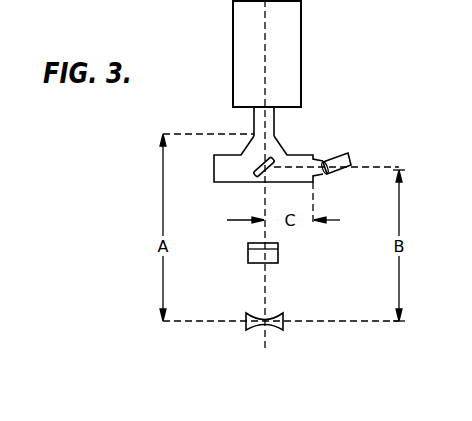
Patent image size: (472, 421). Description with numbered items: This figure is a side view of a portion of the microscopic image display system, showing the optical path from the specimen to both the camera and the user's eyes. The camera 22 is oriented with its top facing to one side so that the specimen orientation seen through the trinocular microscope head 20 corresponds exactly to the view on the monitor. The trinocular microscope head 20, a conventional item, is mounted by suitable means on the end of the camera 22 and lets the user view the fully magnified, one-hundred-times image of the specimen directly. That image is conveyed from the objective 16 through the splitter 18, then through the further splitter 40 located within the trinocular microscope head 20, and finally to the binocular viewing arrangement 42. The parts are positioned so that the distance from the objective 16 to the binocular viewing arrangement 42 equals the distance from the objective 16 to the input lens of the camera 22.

The camera 22 is at (301, 32).
The trinocular microscope head 20 is at (297, 153).
The binocular viewing arrangement 42 is at (343, 153).
The further splitter 40 is at (251, 174).
The splitter 18 is at (280, 262).
The objective 16 is at (283, 316).